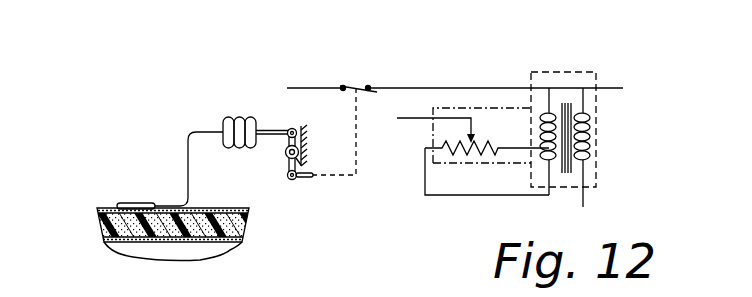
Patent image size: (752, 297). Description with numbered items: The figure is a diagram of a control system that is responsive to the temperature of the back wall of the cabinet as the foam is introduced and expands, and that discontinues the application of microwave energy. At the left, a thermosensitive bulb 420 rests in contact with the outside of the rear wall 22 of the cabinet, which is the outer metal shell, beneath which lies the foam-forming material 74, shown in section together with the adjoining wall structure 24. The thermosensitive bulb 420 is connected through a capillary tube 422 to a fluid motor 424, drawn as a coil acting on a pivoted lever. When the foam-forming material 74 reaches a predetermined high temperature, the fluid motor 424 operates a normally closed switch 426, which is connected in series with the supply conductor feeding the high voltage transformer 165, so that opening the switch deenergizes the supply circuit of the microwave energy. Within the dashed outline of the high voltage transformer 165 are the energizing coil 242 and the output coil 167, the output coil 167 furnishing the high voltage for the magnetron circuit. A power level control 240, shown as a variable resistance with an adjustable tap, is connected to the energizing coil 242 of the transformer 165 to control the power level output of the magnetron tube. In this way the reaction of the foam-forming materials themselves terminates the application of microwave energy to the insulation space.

The outer metal shell 22 is at (103, 210).
The substrate 24 is at (229, 249).
The foam-forming material 74 is at (247, 222).
The thermosensitive bulb 420 is at (135, 203).
The capillary tube 422 is at (188, 131).
The fluid motor 424 is at (227, 120).
The normally closed switch 426 is at (352, 87).
The power level control 240 is at (433, 134).
The energizing coil 242 is at (547, 159).
The high voltage transformer 165 is at (580, 72).
The output coil 167 is at (594, 135).